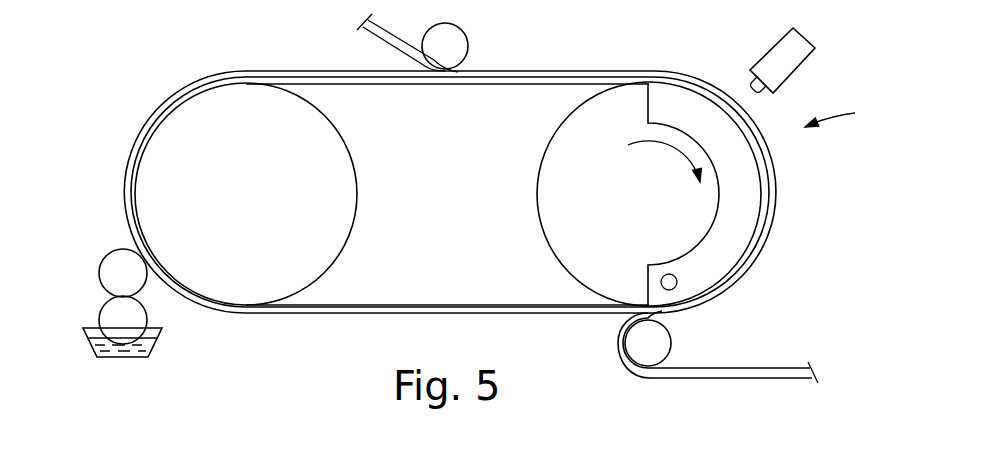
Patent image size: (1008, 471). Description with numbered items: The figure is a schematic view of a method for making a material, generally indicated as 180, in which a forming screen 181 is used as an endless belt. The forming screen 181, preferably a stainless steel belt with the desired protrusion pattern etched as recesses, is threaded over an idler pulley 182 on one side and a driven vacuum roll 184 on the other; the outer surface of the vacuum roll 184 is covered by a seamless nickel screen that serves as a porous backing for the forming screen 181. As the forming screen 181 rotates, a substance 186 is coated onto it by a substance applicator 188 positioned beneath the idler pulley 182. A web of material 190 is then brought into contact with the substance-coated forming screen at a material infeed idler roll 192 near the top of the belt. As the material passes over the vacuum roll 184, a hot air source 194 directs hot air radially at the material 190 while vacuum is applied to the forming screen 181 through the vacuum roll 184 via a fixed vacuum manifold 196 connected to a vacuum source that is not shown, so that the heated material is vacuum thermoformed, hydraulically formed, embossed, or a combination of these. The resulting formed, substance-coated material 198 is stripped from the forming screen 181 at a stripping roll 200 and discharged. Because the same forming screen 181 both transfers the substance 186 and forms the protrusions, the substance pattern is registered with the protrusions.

The method for making a material 180 is at (851, 117).
The forming screen 181 is at (393, 313).
The idler pulley 182 is at (333, 147).
The driven vacuum roll 184 is at (545, 183).
The substance 186 is at (126, 158).
The substance applicator 188 is at (107, 265).
The web of material 190 is at (375, 36).
The material infeed idler roll 192 is at (458, 36).
The hot air source 194 is at (772, 57).
The fixed vacuum manifold 196 is at (662, 280).
The formed, substance coated material 198 is at (772, 368).
The stripping roll 200 is at (668, 343).